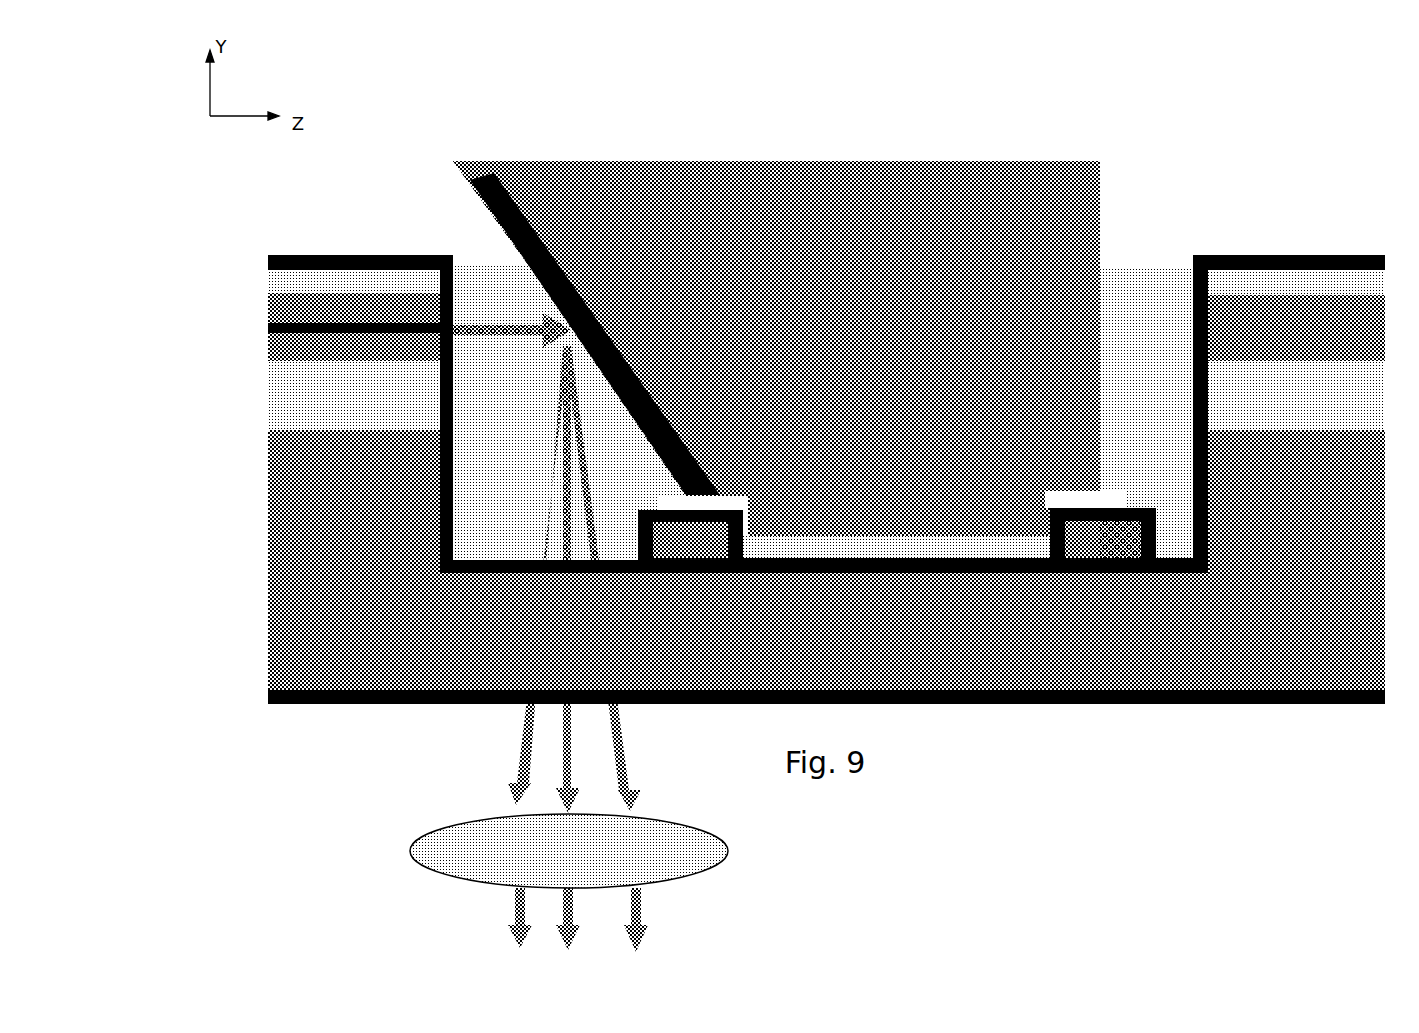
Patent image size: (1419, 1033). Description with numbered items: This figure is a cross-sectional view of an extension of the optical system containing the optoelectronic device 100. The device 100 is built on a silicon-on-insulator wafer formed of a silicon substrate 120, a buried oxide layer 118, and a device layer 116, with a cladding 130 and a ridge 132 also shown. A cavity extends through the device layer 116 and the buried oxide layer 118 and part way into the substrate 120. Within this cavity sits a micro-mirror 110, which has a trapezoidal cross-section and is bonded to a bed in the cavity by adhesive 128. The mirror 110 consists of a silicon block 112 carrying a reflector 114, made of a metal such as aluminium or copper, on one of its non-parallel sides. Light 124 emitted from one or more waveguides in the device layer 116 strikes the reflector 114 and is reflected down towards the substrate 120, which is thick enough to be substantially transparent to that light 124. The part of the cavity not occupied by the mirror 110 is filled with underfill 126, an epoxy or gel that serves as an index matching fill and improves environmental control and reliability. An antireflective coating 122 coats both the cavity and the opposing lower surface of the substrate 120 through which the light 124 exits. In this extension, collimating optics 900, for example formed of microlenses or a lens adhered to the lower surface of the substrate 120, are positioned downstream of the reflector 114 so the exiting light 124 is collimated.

The optoelectronic device 100 is at (300, 200).
The mirror 110 is at (430, 165).
The silicon block 112 is at (622, 188).
The reflector 114 is at (520, 215).
The device layer 116 is at (268, 349).
The buried oxide layer 118 is at (297, 408).
The silicon substrate 120 is at (288, 583).
The antireflective coating 122 is at (403, 695).
The light 124 is at (283, 318).
The underfill 126 is at (490, 535).
The adhesive 128 is at (933, 550).
The cladding 130 is at (273, 273).
The ridge 132 is at (660, 537).
The collimating optics 900 is at (403, 840).